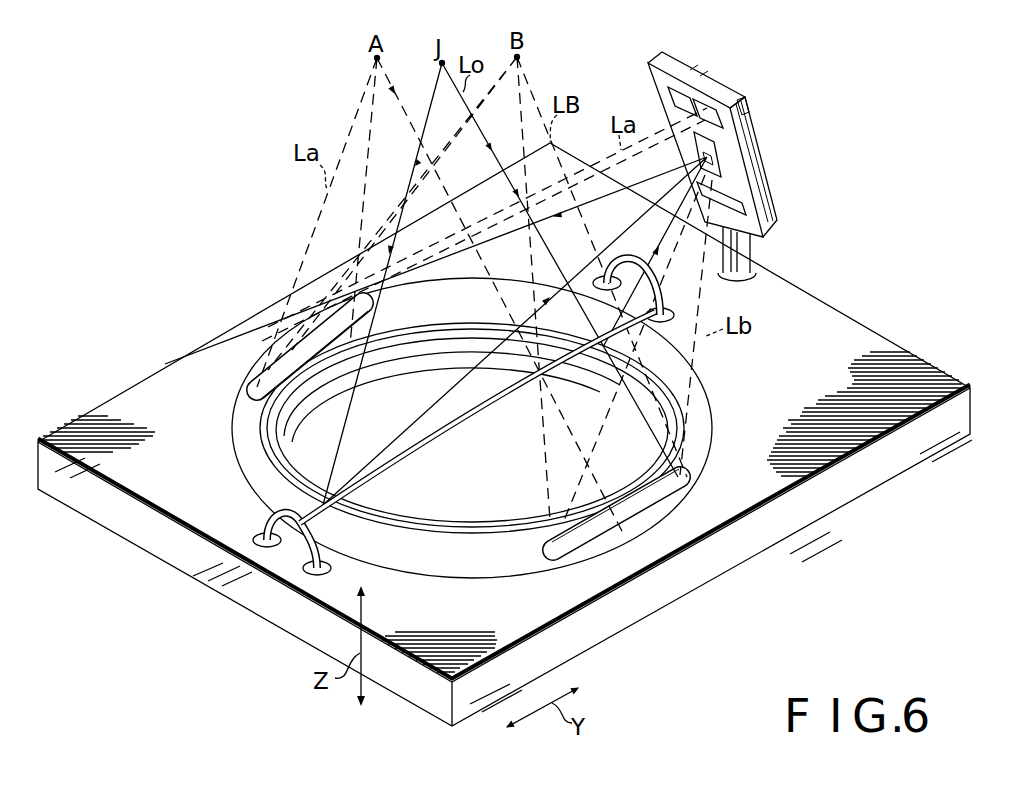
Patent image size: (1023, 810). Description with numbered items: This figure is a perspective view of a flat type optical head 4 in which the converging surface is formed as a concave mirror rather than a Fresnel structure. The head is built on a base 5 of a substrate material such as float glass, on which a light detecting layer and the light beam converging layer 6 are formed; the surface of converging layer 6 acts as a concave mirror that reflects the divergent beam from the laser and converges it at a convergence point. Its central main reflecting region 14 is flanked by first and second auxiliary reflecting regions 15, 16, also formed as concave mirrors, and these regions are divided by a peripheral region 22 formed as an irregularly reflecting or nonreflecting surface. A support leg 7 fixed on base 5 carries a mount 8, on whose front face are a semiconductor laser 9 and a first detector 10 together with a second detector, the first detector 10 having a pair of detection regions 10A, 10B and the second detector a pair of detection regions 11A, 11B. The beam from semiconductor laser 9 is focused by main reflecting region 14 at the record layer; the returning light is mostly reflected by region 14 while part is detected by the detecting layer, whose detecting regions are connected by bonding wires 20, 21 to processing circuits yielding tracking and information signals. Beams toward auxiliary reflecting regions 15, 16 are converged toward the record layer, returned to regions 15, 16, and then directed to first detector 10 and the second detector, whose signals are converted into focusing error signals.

The flat type optical head 4 is at (868, 292).
The base 5 is at (890, 472).
The light beam converging layer 6 is at (972, 385).
The support leg 7 is at (752, 263).
The mount 8 is at (762, 120).
The semiconductor laser 9 is at (716, 151).
The first detector 10 is at (709, 110).
The detection region 10A is at (679, 96).
The detection region 10B is at (744, 100).
The detection region 11A is at (704, 161).
The detection region 11B is at (738, 206).
The main reflecting region 14 is at (438, 350).
The first auxiliary reflecting region 15 is at (270, 357).
The second auxiliary reflecting region 16 is at (664, 494).
The bonding wire 20 is at (628, 271).
The bonding wire 21 is at (262, 526).
The peripheral region 22 is at (682, 383).